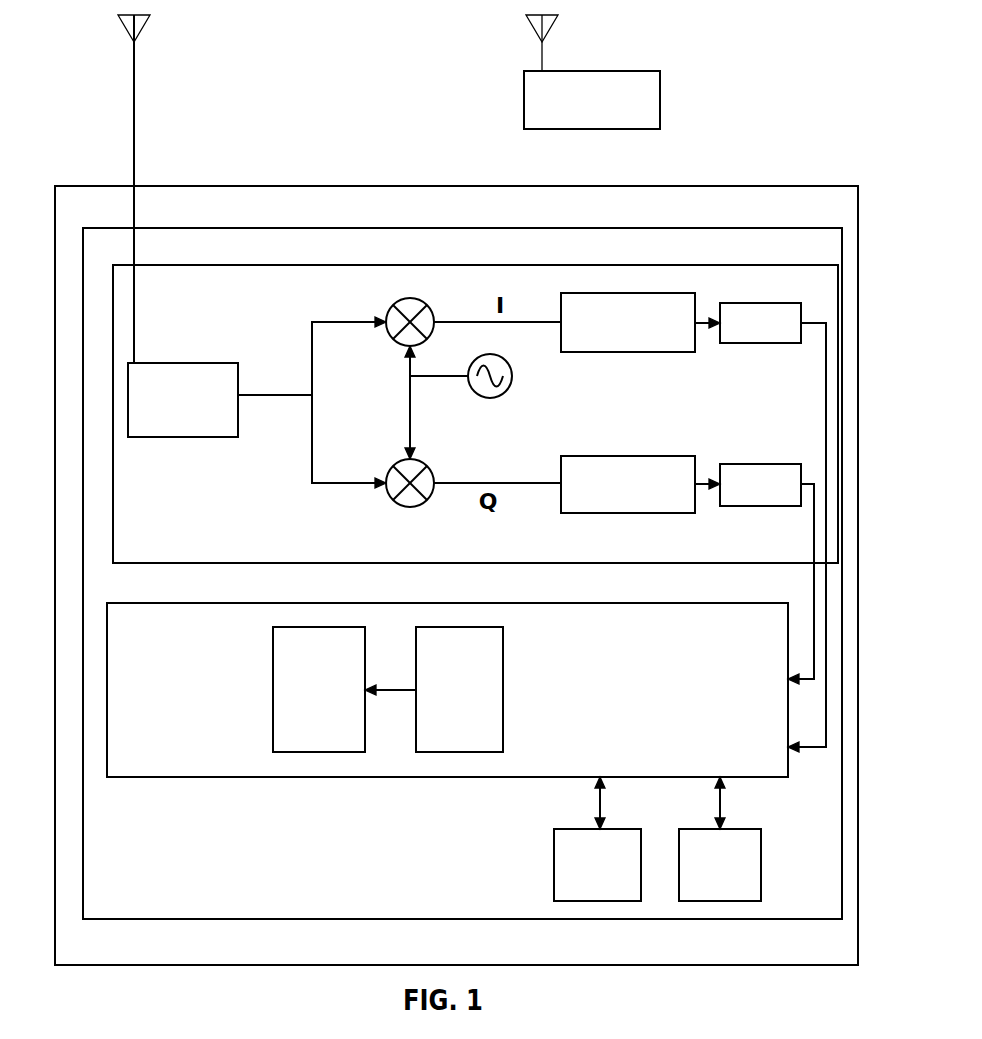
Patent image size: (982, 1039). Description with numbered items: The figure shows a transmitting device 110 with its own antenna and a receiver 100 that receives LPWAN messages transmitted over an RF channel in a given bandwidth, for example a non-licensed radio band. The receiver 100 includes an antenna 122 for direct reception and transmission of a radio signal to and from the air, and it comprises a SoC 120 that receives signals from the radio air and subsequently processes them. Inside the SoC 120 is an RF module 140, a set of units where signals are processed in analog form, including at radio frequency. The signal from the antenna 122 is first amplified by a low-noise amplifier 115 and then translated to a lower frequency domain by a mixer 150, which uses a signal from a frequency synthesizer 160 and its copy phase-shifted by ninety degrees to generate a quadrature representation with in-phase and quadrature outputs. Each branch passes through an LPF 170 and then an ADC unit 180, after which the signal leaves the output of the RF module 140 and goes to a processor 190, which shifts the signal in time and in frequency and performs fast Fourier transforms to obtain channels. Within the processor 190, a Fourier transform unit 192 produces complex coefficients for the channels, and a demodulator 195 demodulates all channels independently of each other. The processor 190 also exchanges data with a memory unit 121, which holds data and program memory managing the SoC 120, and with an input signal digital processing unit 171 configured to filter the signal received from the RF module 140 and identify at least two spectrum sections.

The receiver 100 is at (728, 186).
The transmitting device 110 is at (660, 94).
The low-noise amplifier 115 is at (164, 417).
The SoC 120 is at (587, 258).
The memory unit 121 is at (579, 878).
The antenna 122 is at (155, 44).
The RF signal processing unit 140 is at (184, 316).
The mixer 150 is at (389, 307).
The frequency synthesizer 160 is at (512, 370).
The LPF 170 is at (609, 336).
The input signal digital processing unit 171 is at (701, 878).
The ADC unit 180 is at (741, 337).
The processor 190 is at (728, 639).
The Fourier transform unit 192 is at (441, 706).
The demodulator 195 is at (299, 706).